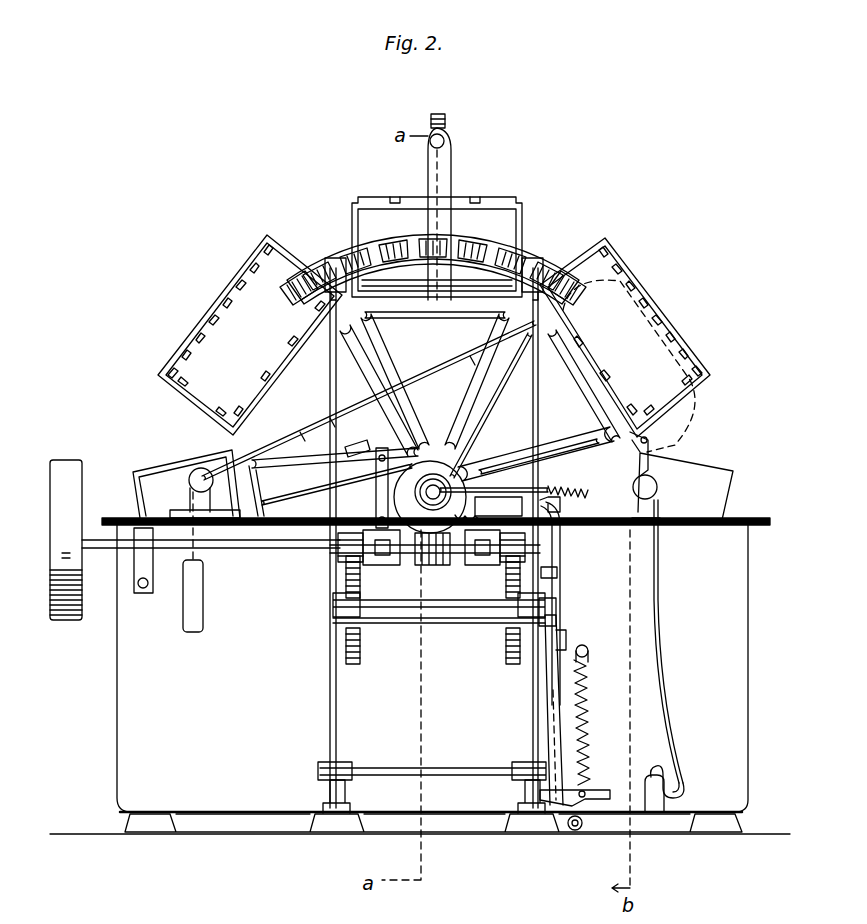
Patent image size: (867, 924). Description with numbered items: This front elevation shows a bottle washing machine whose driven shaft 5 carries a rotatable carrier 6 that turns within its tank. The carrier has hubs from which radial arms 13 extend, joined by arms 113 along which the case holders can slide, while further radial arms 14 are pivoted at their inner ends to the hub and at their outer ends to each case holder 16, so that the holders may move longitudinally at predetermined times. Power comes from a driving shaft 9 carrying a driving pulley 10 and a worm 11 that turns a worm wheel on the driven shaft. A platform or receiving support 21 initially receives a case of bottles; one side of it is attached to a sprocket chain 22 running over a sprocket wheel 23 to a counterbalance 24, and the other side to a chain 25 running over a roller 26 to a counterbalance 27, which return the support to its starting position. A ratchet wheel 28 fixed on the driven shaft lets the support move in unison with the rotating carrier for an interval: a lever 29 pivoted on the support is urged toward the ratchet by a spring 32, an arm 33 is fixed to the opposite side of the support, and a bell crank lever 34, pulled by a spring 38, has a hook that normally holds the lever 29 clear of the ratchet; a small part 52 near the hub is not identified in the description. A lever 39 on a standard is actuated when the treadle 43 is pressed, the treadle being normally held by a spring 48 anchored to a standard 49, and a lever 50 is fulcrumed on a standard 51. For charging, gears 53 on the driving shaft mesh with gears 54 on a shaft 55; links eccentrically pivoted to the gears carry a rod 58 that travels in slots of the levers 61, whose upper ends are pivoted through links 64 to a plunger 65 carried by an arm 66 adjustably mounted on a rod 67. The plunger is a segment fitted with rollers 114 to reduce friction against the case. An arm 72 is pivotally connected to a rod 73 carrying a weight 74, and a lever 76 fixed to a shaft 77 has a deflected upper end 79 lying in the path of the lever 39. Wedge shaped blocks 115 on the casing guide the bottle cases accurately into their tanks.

The driven shaft 5 is at (470, 455).
The rotatable carrier 6 is at (625, 337).
The driving shaft 9 is at (273, 530).
The driving pulley 10 is at (65, 470).
The worm 11 is at (428, 566).
The radial arms 13 is at (380, 372).
The radial arms 14 is at (388, 360).
The case holder 16 is at (705, 395).
The receiving support 21 is at (583, 372).
The sprocket chain 22 is at (663, 628).
The sprocket wheel 23 is at (657, 488).
The counterbalance 24 is at (657, 799).
The sprocket chain 25 is at (437, 368).
The roller 26 is at (203, 476).
The counterbalance 27 is at (190, 610).
The ratchet wheel 28 is at (480, 466).
The lever 29 is at (498, 506).
The spring 32 is at (456, 506).
The arm 33 is at (475, 412).
The bell crank lever 34 is at (560, 510).
The spring 38 is at (526, 488).
The lever 39 is at (560, 556).
The treadle 43 is at (611, 790).
The spring 48 is at (590, 724).
The standard 49 is at (590, 677).
The lever 50 is at (418, 445).
The standard 51 is at (378, 503).
The stop block 52 is at (357, 447).
The gears 53 is at (335, 550).
The gears 54 is at (353, 664).
The shaft 55 is at (415, 612).
The rod 58 is at (437, 605).
The levers 61 is at (331, 392).
The links 64 is at (334, 262).
The plunger 65 is at (480, 242).
The arm 66 is at (447, 182).
The rod 67 is at (445, 138).
The arm 72 is at (558, 618).
The rod 73 is at (566, 645).
The weight 74 is at (547, 689).
The lever 76 is at (552, 742).
The shaft 77 is at (573, 831).
The deflected end 79 is at (557, 574).
The arms 113 is at (422, 302).
The rollers 114 is at (388, 250).
The wedge shaped blocks 115 is at (195, 478).